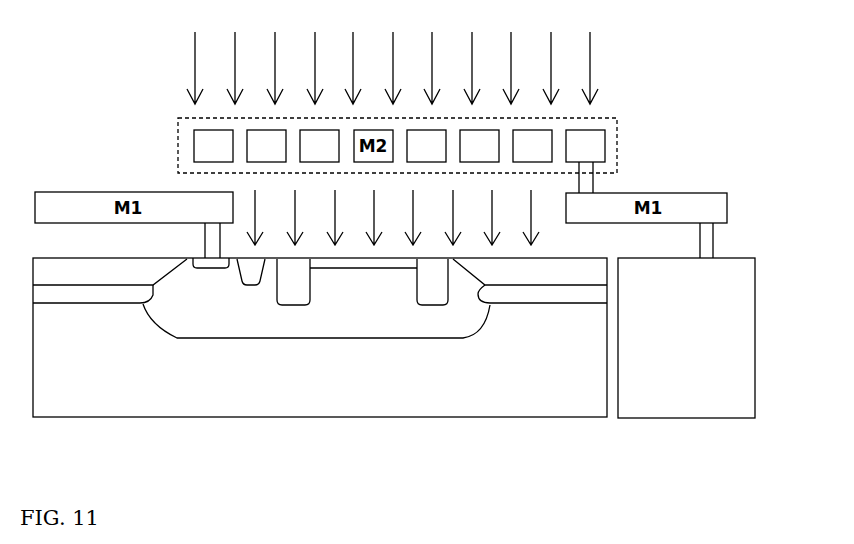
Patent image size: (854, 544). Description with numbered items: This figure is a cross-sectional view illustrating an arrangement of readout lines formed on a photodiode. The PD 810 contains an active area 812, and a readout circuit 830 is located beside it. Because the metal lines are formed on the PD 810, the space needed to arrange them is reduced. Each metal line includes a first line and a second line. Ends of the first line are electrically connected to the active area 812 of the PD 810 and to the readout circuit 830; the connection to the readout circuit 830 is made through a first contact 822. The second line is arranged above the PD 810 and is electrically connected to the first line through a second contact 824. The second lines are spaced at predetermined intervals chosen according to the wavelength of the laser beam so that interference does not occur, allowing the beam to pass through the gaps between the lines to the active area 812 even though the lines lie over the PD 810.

The PD 810 is at (82, 405).
The active area 812 is at (198, 330).
The first contact 822 is at (713, 241).
The second contact 824 is at (593, 184).
The readout circuit 830 is at (740, 344).